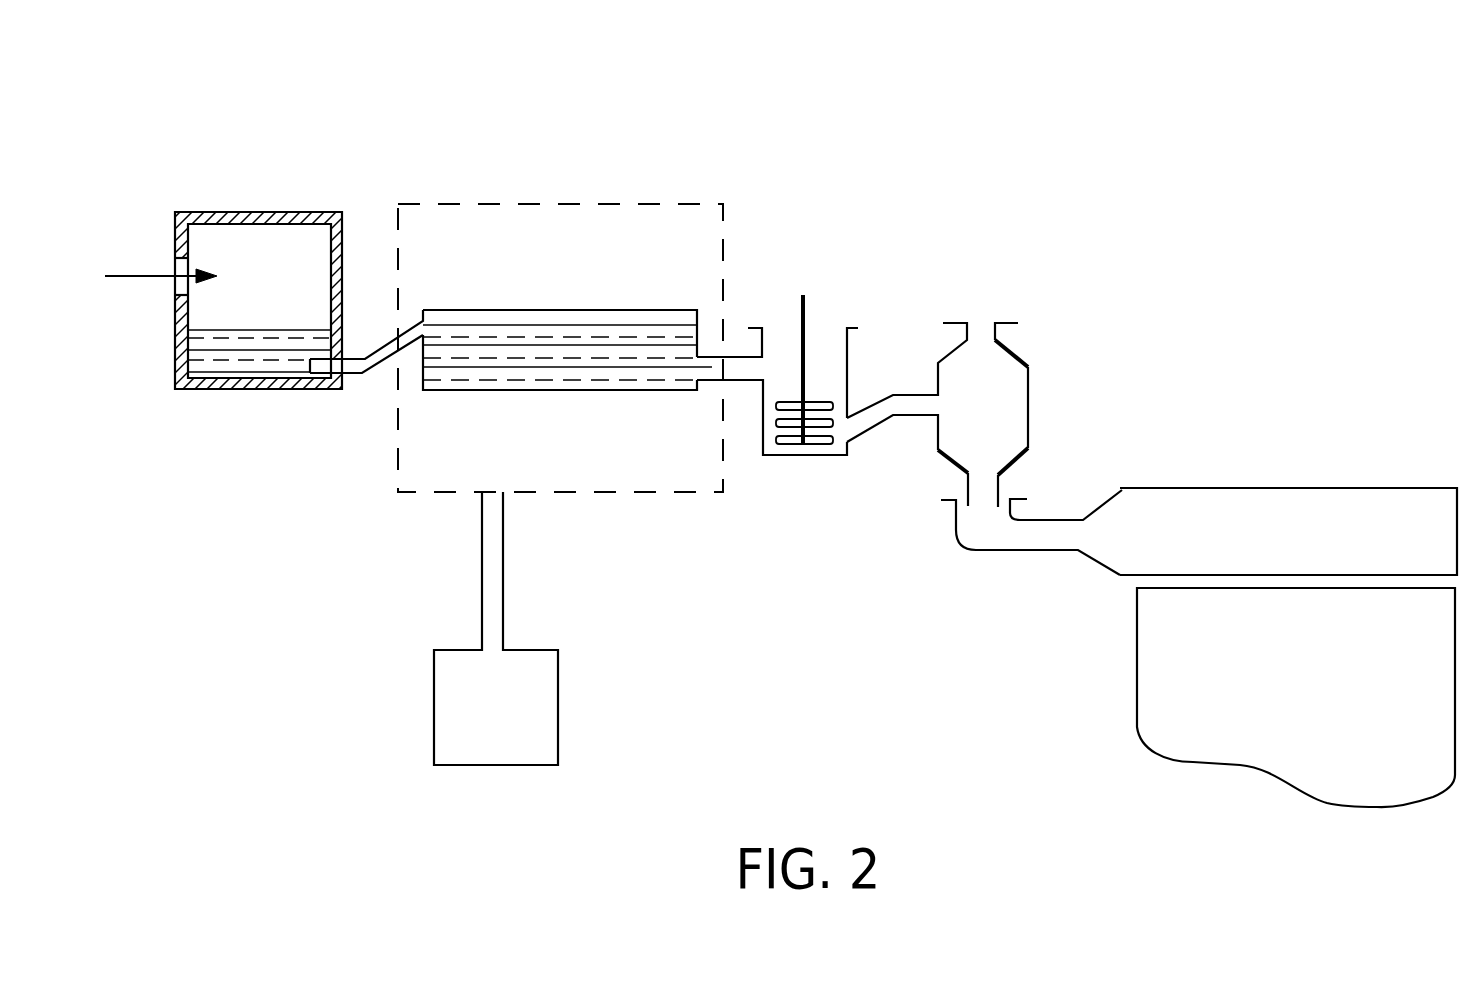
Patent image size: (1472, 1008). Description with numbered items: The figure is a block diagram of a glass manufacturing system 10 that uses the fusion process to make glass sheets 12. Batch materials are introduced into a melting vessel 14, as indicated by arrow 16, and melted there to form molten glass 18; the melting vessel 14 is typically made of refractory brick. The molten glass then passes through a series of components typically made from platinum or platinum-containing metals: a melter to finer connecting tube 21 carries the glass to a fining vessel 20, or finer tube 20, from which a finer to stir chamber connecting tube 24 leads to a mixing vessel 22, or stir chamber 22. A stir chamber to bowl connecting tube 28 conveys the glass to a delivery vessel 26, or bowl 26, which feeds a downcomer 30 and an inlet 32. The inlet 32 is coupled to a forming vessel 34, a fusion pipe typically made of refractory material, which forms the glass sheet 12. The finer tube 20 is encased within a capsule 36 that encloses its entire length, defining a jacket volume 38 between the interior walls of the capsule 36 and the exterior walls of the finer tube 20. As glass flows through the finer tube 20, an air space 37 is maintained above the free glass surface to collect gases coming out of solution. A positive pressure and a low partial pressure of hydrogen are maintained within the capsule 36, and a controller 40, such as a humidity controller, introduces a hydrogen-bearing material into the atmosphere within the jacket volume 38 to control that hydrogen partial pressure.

The glass manufacturing system 10 is at (843, 163).
The glass sheet 12 is at (1136, 673).
The melting vessel 14 is at (229, 210).
The arrow 16 is at (161, 263).
The molten glass 18 is at (278, 328).
The fining vessel 20 is at (667, 308).
The melter to finer connecting tube 21 is at (375, 340).
The mixing vessel 22 is at (847, 378).
The finer to stir chamber connecting tube 24 is at (732, 358).
The delivery vessel 26 is at (1030, 385).
The stir chamber to bowl connecting tube 28 is at (875, 428).
The downcomer 30 is at (1000, 485).
The inlet 32 is at (1020, 552).
The forming vessel 34 is at (1293, 487).
The capsule 36 is at (534, 204).
The air space 37 is at (552, 320).
The jacket volume 38 is at (444, 285).
The controller 40 is at (558, 674).